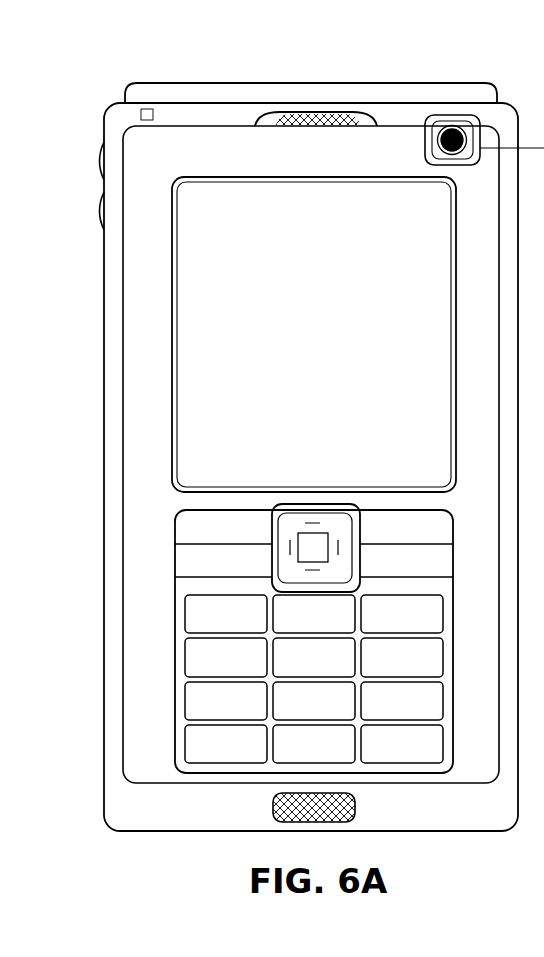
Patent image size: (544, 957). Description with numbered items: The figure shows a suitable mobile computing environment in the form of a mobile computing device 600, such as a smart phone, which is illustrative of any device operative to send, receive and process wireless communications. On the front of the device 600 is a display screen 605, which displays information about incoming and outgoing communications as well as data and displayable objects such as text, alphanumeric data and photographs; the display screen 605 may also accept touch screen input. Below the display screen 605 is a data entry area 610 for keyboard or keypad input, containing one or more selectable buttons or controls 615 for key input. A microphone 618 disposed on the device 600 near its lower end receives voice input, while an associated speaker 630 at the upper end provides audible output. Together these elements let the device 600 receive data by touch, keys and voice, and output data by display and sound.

The mobile computing device 600 is at (103, 108).
The display screen 605 is at (210, 317).
The data entry area 610 is at (175, 553).
The selectable buttons or controls 615 is at (198, 657).
The microphone 618 is at (275, 798).
The speaker 630 is at (355, 118).